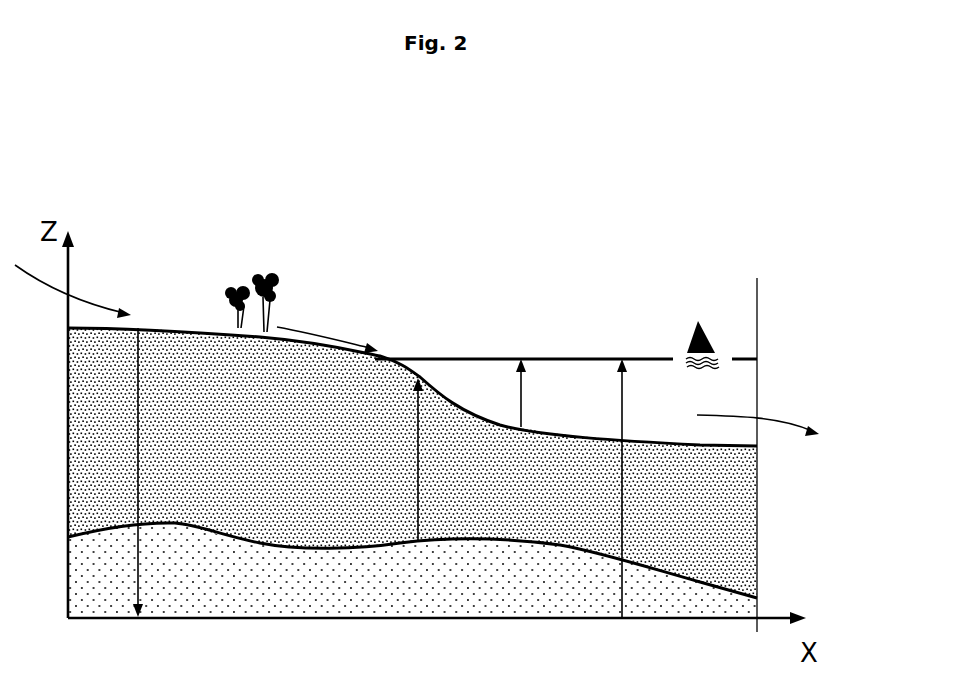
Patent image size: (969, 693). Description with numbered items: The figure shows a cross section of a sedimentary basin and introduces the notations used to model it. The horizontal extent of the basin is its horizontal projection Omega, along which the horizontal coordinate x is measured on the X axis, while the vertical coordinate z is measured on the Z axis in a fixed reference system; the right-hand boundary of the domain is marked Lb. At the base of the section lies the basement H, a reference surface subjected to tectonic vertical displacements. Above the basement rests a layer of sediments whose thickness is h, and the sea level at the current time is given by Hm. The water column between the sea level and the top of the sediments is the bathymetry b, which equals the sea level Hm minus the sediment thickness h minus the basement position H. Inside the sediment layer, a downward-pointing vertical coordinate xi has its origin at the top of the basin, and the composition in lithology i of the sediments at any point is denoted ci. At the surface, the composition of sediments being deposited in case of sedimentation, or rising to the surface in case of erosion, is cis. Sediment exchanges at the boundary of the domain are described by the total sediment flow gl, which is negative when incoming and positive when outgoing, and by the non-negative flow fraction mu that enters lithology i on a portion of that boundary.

The composition in lithology i of the sediments ci is at (415, 470).
The position of basement H is at (220, 544).
The horizontal projection of the basin Omega is at (437, 639).
The basin boundary position L_b Lb is at (749, 474).
The flow fraction entering lithology i mu is at (111, 291).
The composition of the sediments deposited at the surface cis is at (331, 329).
The total flow of sediments gl is at (762, 412).
The vertical coordinate with top of basin as origin xi is at (151, 472).
The thickness of the sediments h is at (458, 459).
The bathymetry b is at (556, 393).
The sea level Hm is at (663, 488).